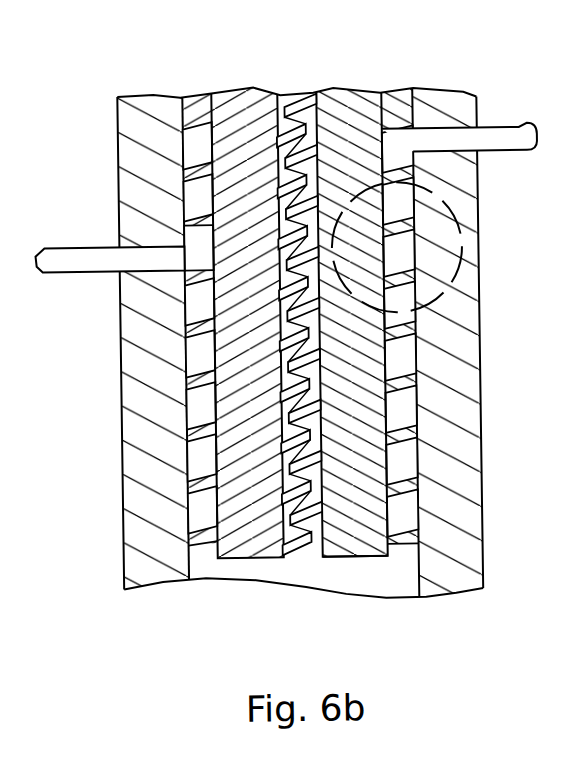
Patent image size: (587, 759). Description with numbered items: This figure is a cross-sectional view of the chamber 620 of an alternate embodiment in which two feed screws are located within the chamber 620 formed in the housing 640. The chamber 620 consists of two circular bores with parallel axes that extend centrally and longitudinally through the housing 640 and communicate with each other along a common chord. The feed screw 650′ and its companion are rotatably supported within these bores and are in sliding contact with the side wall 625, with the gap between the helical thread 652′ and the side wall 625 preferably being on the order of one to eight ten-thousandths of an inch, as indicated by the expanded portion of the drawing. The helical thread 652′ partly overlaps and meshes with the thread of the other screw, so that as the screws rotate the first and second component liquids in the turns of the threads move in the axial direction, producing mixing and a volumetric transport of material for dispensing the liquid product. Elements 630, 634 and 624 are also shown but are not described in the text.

The chamber 620 is at (186, 361).
The bottom wall 624 is at (364, 584).
The side wall 625 is at (400, 566).
The inlet tube 630 is at (89, 257).
The outlet tube 634 is at (501, 138).
The housing 640 is at (136, 425).
The feed screw 650′ is at (246, 99).
The helical thread 652′ is at (190, 101).